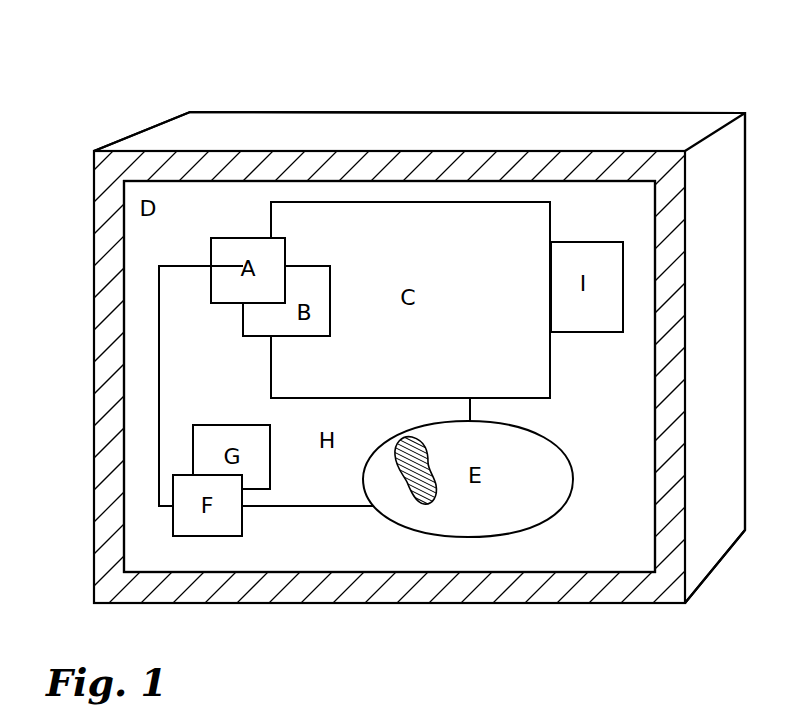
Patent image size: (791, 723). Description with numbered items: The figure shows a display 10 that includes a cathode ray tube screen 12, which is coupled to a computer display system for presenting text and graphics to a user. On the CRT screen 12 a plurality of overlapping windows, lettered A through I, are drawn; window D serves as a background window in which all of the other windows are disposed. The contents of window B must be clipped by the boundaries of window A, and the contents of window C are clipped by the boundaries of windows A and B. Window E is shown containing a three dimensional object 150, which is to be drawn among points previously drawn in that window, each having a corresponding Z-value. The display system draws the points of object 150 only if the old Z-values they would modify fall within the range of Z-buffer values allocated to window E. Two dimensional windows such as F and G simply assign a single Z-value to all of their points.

The display 10 is at (637, 113).
The cathode ray tube screen 12 is at (590, 511).
The three dimensional object 150 is at (423, 497).